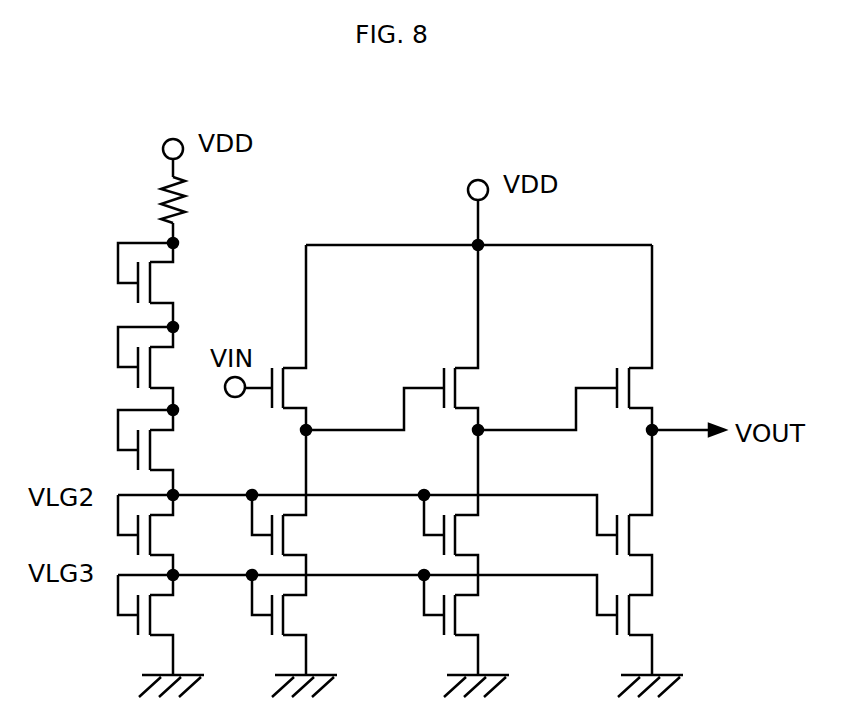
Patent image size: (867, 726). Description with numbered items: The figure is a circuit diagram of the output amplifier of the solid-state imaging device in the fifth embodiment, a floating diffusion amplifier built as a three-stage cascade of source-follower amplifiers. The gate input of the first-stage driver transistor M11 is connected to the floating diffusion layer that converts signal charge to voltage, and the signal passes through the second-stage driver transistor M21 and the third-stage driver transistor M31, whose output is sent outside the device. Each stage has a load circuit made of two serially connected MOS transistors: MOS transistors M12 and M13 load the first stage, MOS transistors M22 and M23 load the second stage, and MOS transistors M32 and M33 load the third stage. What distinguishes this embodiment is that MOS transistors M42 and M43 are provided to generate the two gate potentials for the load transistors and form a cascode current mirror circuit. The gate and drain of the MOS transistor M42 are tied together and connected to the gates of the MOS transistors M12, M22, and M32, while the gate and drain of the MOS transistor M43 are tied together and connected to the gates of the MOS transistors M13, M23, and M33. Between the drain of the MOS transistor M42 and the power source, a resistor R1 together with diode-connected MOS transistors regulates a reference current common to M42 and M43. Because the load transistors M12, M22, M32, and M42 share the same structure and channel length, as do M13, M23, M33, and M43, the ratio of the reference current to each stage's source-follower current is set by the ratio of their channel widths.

The resistor R1 is at (150, 200).
The first-stage driver transistor M11 is at (321, 337).
The second-stage driver transistor M21 is at (424, 337).
The third-stage driver transistor M31 is at (598, 337).
The MOS transistor M12 is at (311, 502).
The MOS transistor M22 is at (483, 502).
The MOS transistor M32 is at (668, 502).
The MOS transistor M13 is at (311, 625).
The MOS transistor M23 is at (483, 625).
The MOS transistor M33 is at (668, 625).
The MOS transistor M42 is at (172, 535).
The MOS transistor M43 is at (172, 625).